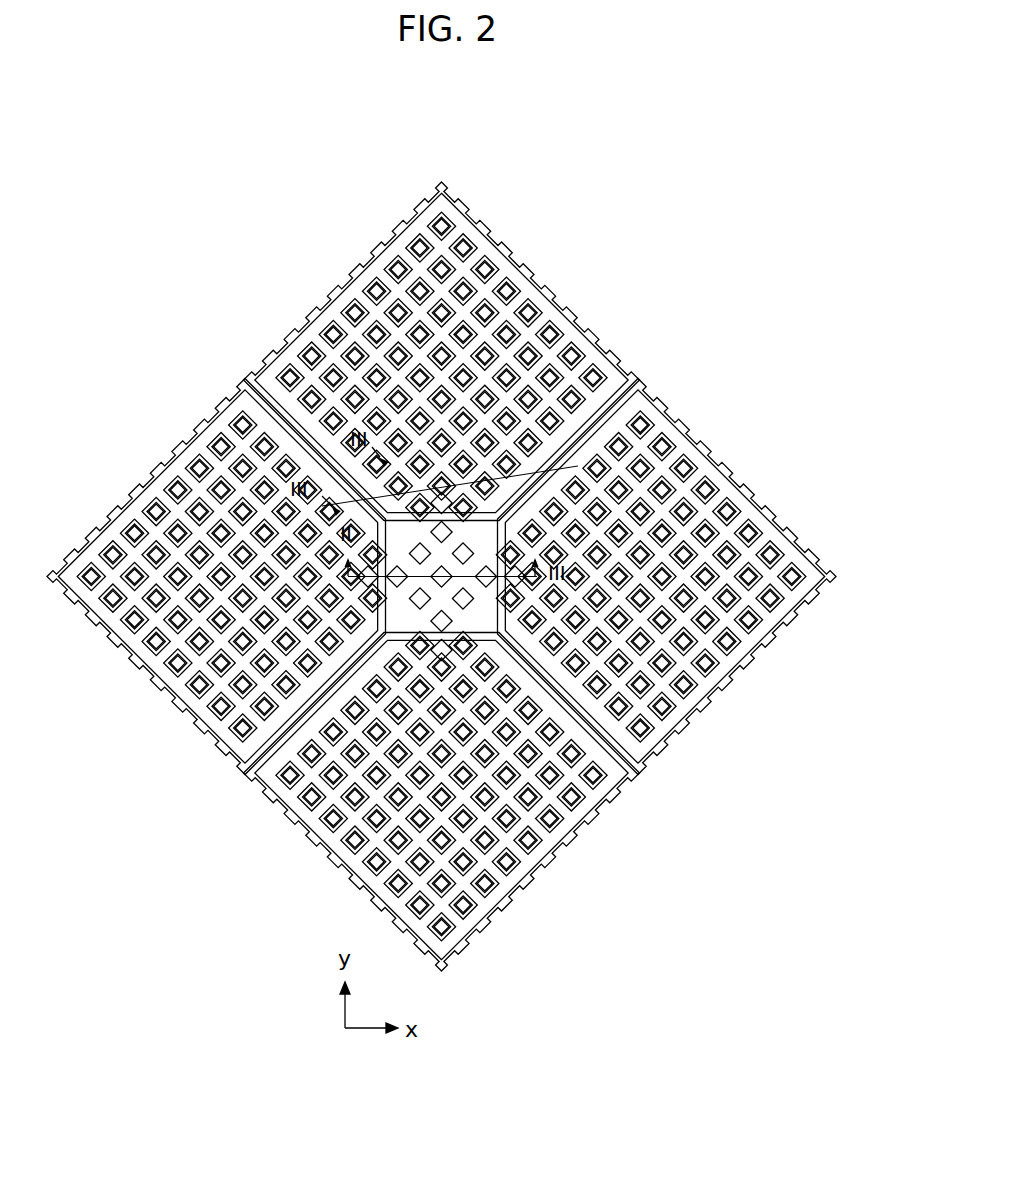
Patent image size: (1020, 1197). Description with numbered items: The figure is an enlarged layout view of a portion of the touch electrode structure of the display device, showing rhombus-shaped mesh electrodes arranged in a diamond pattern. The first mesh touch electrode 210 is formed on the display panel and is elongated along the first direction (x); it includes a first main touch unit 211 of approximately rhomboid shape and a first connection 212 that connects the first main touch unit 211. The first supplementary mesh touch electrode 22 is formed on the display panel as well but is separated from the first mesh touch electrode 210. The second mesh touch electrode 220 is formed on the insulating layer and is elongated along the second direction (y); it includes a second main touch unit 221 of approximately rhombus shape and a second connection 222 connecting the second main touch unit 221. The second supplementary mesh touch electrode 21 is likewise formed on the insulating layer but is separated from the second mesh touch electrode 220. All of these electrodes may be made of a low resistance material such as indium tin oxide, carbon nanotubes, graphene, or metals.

The second supplementary mesh touch electrode 21 is at (733, 477).
The first supplementary mesh touch electrode 22 is at (480, 380).
The first mesh touch electrode 210 is at (343, 675).
The first main touch unit 211 is at (184, 711).
The first connection 212 is at (405, 642).
The second mesh touch electrode 220 is at (540, 478).
The second main touch unit 221 is at (505, 247).
The second connection 222 is at (548, 483).